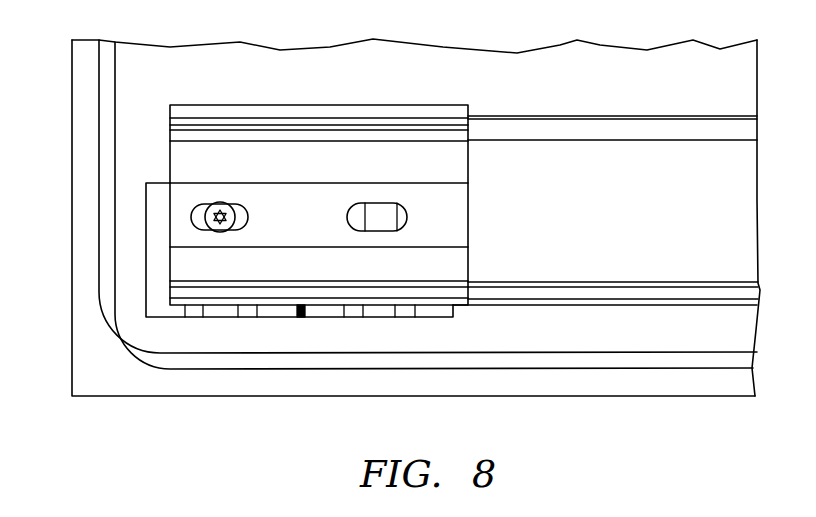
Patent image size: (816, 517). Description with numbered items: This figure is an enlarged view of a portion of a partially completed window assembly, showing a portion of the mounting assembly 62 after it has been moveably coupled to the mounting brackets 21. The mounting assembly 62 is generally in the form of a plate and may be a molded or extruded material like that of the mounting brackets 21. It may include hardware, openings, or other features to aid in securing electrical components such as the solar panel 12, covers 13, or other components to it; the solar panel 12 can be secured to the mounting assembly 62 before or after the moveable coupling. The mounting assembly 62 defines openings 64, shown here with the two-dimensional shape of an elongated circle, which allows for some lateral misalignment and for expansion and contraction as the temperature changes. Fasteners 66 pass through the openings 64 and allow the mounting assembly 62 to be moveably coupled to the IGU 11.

The IGU 11 is at (614, 89).
The solar panel 12 is at (637, 157).
The cover 13 is at (195, 112).
The mounting bracket 21 is at (157, 248).
The mounting assembly 62 is at (362, 157).
The opening 64 is at (243, 220).
The fastener 66 is at (228, 208).